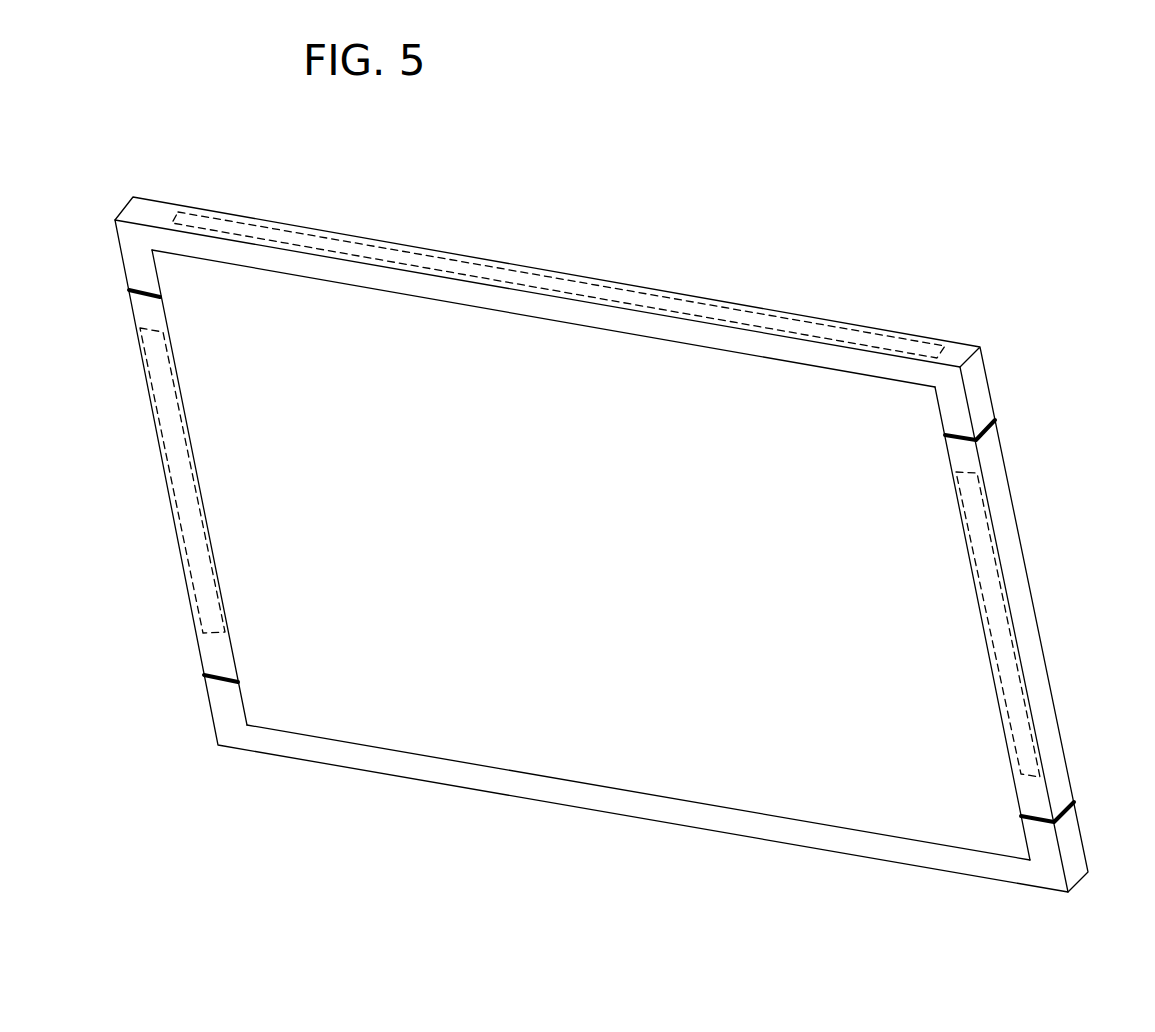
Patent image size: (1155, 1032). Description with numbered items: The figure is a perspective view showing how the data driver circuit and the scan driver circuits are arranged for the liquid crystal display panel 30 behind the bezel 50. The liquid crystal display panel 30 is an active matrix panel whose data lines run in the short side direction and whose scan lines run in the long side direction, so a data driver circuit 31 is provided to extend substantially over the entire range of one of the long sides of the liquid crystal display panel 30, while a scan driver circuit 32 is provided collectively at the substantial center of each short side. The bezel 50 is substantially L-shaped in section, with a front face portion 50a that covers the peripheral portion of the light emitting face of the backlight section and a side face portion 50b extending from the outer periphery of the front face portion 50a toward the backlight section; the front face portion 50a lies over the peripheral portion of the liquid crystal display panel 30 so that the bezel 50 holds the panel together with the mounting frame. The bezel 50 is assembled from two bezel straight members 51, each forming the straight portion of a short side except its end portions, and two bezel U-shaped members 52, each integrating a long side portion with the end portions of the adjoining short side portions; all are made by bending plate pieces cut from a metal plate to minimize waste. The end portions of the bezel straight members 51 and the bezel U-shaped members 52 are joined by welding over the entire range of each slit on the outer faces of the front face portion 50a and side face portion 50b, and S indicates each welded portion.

The bezel 50 is at (253, 116).
The front face portion 50a is at (128, 252).
The side face portion 50b is at (170, 208).
The bezel U-shaped member 52 is at (550, 270).
The bezel straight member 51 is at (197, 640).
The scan driver circuit 32 is at (177, 503).
The data driver circuit 31 is at (637, 290).
The liquid crystal display panel 30 is at (592, 557).
The welded portion S is at (145, 298).